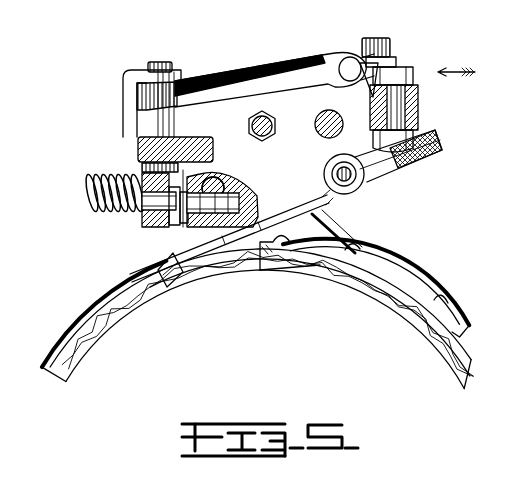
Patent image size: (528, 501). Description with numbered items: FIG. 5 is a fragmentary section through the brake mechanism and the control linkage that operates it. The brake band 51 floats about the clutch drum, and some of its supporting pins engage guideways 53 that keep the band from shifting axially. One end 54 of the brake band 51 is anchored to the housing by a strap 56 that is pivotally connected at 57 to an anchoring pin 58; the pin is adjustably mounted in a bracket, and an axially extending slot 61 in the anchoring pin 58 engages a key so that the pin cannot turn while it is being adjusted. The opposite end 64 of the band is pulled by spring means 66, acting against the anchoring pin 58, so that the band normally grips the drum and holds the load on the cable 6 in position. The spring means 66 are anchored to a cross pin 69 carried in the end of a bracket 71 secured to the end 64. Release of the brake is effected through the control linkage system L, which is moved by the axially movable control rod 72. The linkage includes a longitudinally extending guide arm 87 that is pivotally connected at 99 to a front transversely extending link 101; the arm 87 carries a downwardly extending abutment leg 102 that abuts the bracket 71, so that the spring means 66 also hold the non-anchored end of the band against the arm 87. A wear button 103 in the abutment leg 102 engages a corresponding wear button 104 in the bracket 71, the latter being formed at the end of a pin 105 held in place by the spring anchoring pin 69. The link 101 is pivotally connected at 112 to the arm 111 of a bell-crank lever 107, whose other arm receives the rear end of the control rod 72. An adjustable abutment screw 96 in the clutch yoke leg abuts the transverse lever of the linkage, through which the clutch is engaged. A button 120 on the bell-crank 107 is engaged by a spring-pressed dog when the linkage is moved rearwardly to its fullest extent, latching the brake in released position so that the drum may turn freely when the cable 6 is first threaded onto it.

The brake band 51 is at (461, 362).
The guideways 53 is at (58, 337).
The end of brake band 54 is at (160, 286).
The strap 56 is at (313, 198).
The pivotal connection 57 is at (353, 181).
The anchoring pin 58 is at (373, 175).
The axially extending slot 61 is at (433, 137).
The opposite end of brake band 64 is at (255, 262).
The spring means 66 is at (93, 177).
The cross pin 69 is at (213, 186).
The bracket 71 is at (320, 236).
The control rod 72 is at (330, 111).
The guide arm 87 is at (198, 138).
The adjustable abutment screw 96 is at (272, 138).
The pivotal connection 99 is at (152, 63).
The front transversely extending link 101 is at (250, 78).
The abutment leg 102 is at (146, 224).
The wear button 103 is at (176, 226).
The wear button 104 is at (190, 226).
The pin 105 is at (237, 200).
The bell-crank lever 107 is at (418, 104).
The bell-crank arm 111 is at (352, 52).
The pivotal connection 112 is at (377, 44).
The button 120 is at (408, 63).
The cable 6 is at (466, 75).
The control linkage system L is at (296, 78).